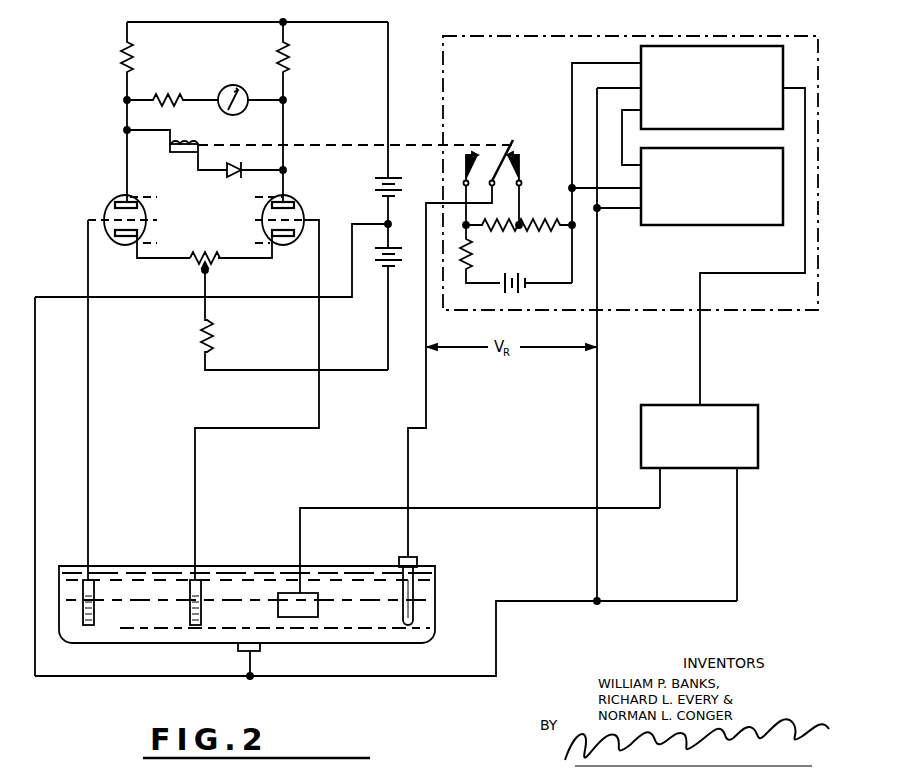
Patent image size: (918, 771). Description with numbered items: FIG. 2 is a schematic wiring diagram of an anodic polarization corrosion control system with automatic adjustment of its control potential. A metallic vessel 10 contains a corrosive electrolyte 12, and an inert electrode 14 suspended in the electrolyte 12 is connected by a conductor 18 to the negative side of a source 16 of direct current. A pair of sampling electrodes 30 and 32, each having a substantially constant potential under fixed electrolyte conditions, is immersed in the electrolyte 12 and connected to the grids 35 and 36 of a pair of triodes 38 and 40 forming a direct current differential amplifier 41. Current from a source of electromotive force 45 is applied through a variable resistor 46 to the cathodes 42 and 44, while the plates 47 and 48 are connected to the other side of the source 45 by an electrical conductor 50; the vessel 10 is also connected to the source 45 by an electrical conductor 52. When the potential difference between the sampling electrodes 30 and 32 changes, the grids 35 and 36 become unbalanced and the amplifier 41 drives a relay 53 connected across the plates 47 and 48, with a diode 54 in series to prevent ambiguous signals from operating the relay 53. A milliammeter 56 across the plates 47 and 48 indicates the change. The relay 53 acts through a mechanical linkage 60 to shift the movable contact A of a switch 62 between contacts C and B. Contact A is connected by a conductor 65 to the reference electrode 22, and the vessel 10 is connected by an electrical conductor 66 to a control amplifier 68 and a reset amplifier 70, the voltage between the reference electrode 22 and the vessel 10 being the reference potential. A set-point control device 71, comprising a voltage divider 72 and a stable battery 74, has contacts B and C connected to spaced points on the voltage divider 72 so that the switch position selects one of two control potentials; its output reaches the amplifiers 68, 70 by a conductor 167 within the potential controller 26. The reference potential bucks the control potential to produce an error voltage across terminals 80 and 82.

The metallic vessel 10 is at (436, 606).
The corrosive electrolyte 12 is at (253, 621).
The inert electrode 14 is at (290, 614).
The source of direct current 16 is at (692, 463).
The conductor 18 is at (520, 510).
The reference electrode 22 is at (416, 597).
The potential controller 26 is at (447, 80).
The sampling electrode 30 is at (92, 580).
The sampling electrode 32 is at (202, 580).
The grid 35 is at (150, 219).
The grid 36 is at (262, 227).
The triode 38 is at (105, 213).
The triode 40 is at (303, 217).
The direct current differential amplifier 41 is at (208, 208).
The cathode 42 is at (128, 238).
The cathode 44 is at (288, 238).
The source of electromotive force 45 is at (416, 237).
The variable resistor 46 is at (196, 268).
The plate 47 is at (124, 197).
The plate 48 is at (288, 199).
The electrical conductor 50 is at (386, 65).
The electrical conductor 52 is at (36, 352).
The relay 53 is at (170, 151).
The diode 54 is at (235, 163).
The milliammeter 56 is at (222, 88).
The mechanical linkage 60 is at (415, 145).
The switch 62 is at (523, 220).
The conductor 65 is at (425, 324).
The electrical conductor 66 is at (596, 408).
The control amplifier 68 is at (642, 58).
The reset amplifier 70 is at (664, 228).
The set-point control device 71 is at (458, 265).
The voltage divider 72 is at (562, 231).
The battery 74 is at (530, 292).
The terminal 80 is at (574, 186).
The terminal 82 is at (599, 211).
The conductor 167 is at (570, 196).